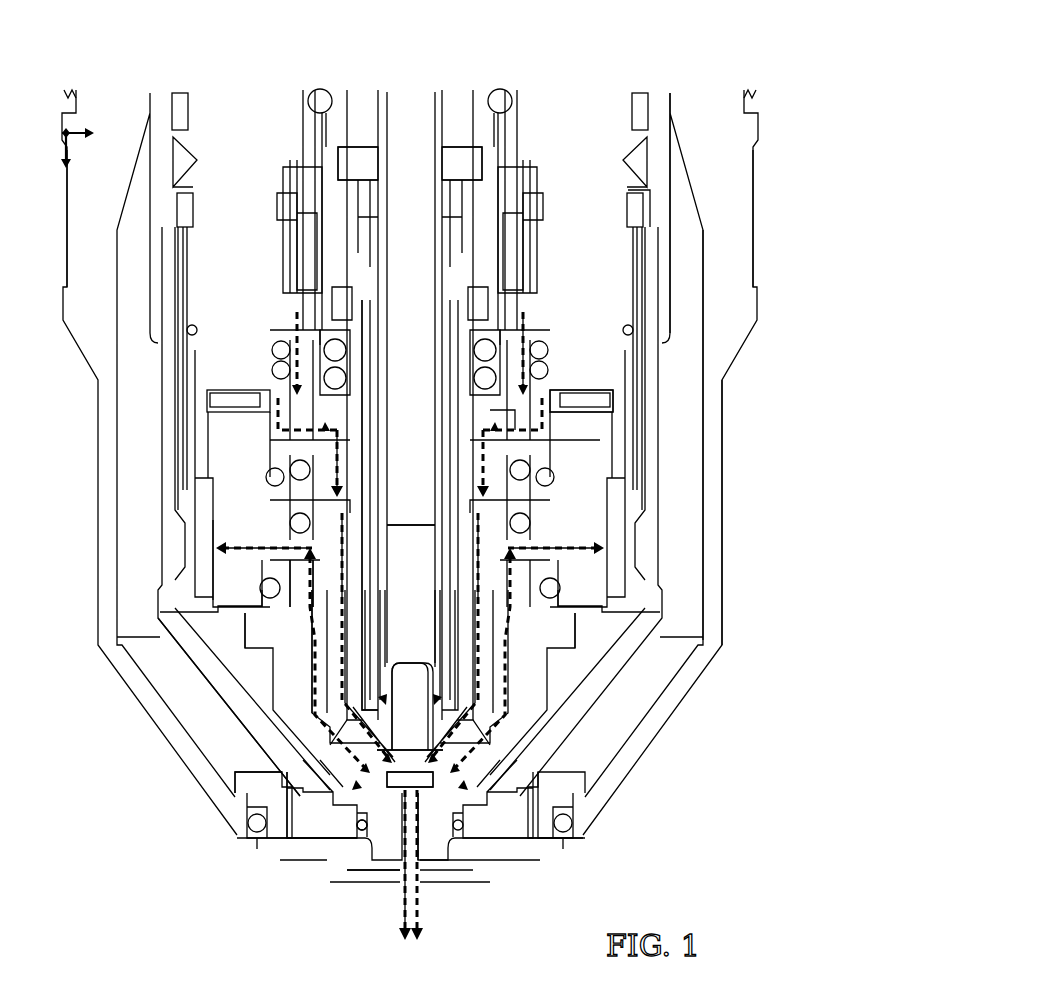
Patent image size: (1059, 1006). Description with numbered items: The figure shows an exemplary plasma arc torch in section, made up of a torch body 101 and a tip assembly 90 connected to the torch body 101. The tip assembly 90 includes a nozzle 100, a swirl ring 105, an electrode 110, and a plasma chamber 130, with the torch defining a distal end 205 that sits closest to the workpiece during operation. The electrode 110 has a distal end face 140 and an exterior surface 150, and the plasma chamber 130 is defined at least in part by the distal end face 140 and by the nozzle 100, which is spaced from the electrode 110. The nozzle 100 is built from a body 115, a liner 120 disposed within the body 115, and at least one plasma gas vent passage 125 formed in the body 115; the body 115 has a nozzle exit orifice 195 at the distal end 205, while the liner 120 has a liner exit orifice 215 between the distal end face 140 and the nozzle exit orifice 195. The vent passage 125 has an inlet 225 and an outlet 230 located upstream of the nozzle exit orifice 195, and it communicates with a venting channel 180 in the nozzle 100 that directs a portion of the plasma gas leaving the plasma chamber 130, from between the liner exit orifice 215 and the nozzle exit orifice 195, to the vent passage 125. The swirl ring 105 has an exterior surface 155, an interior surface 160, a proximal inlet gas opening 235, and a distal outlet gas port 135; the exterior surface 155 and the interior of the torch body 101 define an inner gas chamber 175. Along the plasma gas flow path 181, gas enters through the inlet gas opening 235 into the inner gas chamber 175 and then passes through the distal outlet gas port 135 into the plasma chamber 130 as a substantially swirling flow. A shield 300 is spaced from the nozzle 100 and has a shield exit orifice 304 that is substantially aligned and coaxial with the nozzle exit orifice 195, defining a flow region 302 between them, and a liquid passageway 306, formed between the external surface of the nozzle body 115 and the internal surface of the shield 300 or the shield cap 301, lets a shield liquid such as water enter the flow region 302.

The tip assembly 90 is at (690, 88).
The torch body 101 is at (631, 366).
The nozzle 100 is at (410, 655).
The swirl ring 105 is at (482, 360).
The inner gas chamber 175 is at (503, 422).
The distal outlet gas port 135 is at (325, 425).
The exterior surface 150 is at (471, 462).
The plasma gas flow path 181 is at (540, 340).
The proximal inlet gas opening 235 is at (548, 302).
The exterior surface 155 is at (555, 420).
The interior surface 160 is at (553, 447).
The outlet 230 is at (262, 544).
The inlet 225 is at (313, 550).
The electrode 110 is at (467, 587).
The plasma gas vent passage 125 is at (560, 560).
The plasma chamber 130 is at (405, 760).
The distal end face 140 is at (412, 757).
The liner 120 is at (548, 683).
The venting channel 180 is at (315, 707).
The shield cap 301 is at (195, 762).
The shield 300 is at (268, 840).
The liner exit orifice 215 is at (361, 825).
The body 115 is at (361, 850).
The flow region 302 is at (395, 868).
The distal end 205 is at (370, 904).
The shield exit orifice 304 is at (420, 858).
The nozzle exit orifice 195 is at (410, 840).
The liquid passageway 306 is at (570, 852).